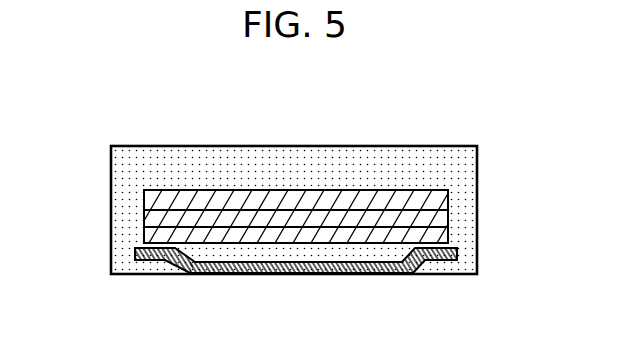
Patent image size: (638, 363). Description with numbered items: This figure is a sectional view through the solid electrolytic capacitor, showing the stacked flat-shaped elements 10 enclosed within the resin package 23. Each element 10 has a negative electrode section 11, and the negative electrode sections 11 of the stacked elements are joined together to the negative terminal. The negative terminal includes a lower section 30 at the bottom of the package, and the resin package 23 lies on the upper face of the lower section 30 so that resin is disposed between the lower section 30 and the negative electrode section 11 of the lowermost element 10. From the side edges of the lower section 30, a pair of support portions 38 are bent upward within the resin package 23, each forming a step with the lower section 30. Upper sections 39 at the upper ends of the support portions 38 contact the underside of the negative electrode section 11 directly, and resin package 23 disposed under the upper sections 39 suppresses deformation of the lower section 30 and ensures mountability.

The resin package 23 is at (133, 177).
The negative electrode section 11 is at (285, 198).
The flat-shaped element 10 is at (433, 237).
The lower section 30 is at (303, 270).
The upper section 39 is at (152, 256).
The support portion 38 is at (415, 259).